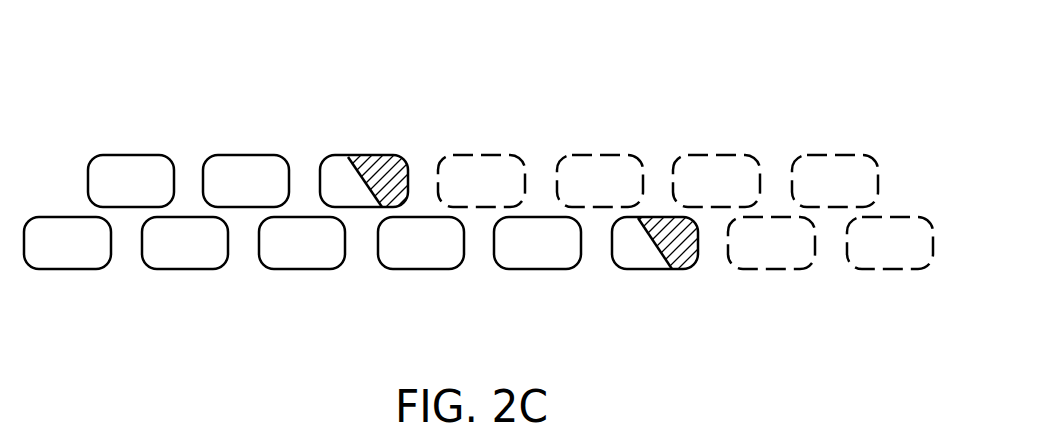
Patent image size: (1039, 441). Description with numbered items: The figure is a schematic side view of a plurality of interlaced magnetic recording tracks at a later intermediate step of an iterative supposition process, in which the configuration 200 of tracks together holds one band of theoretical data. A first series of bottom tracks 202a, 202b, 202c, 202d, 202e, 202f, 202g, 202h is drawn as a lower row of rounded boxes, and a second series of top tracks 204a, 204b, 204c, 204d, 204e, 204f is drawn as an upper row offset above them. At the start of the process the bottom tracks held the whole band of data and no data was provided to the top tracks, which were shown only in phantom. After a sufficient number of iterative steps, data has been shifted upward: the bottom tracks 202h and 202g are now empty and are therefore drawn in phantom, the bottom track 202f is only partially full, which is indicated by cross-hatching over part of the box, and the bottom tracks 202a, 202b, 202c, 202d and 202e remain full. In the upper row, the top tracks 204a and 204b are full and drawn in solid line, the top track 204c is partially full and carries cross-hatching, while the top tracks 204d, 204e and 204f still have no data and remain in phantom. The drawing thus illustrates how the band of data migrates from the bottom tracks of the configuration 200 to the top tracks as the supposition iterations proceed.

The preliminary configuration 200 is at (161, 76).
The bottom track 202a is at (43, 269).
The bottom track 202b is at (163, 269).
The bottom track 202c is at (282, 269).
The bottom track 202d is at (395, 269).
The bottom track 202e is at (518, 269).
The bottom track 202f is at (627, 269).
The bottom track 202g is at (747, 269).
The bottom track 202h is at (863, 269).
The top track 204a is at (132, 155).
The top track 204b is at (235, 155).
The top track 204c is at (372, 155).
The top track 204d is at (467, 155).
The top track 204e is at (587, 155).
The top track 204f is at (700, 155).